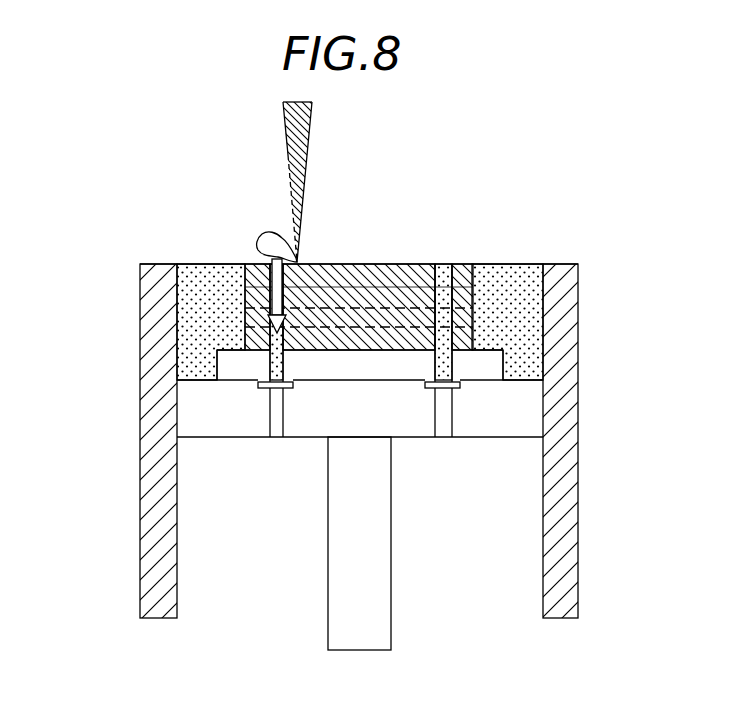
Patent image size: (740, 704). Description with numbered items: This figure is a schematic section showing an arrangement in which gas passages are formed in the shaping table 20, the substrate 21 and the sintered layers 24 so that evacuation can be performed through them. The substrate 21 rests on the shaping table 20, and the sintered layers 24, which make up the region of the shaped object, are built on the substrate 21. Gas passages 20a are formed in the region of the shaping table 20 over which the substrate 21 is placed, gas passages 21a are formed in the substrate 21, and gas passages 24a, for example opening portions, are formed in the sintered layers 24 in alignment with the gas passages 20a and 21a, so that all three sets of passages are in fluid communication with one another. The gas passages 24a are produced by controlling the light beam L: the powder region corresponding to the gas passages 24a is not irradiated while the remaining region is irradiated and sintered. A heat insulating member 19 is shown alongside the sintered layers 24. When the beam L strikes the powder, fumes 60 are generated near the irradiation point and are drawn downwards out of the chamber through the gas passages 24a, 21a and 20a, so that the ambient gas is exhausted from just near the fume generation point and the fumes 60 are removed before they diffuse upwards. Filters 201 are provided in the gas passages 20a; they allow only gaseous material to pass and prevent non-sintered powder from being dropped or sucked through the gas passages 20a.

The heat insulating member 19 is at (510, 273).
The shaping table 20 is at (525, 407).
The gas passages of the shaping table 20a is at (270, 410).
The substrate 21 is at (487, 365).
The gas passages of the substrate 21a is at (266, 360).
The sintered layers 24 is at (388, 290).
The gas passages of the sintered layers 24a is at (268, 292).
The fumes 60 is at (263, 235).
The filters 201 is at (291, 390).
The laser beam L is at (304, 156).